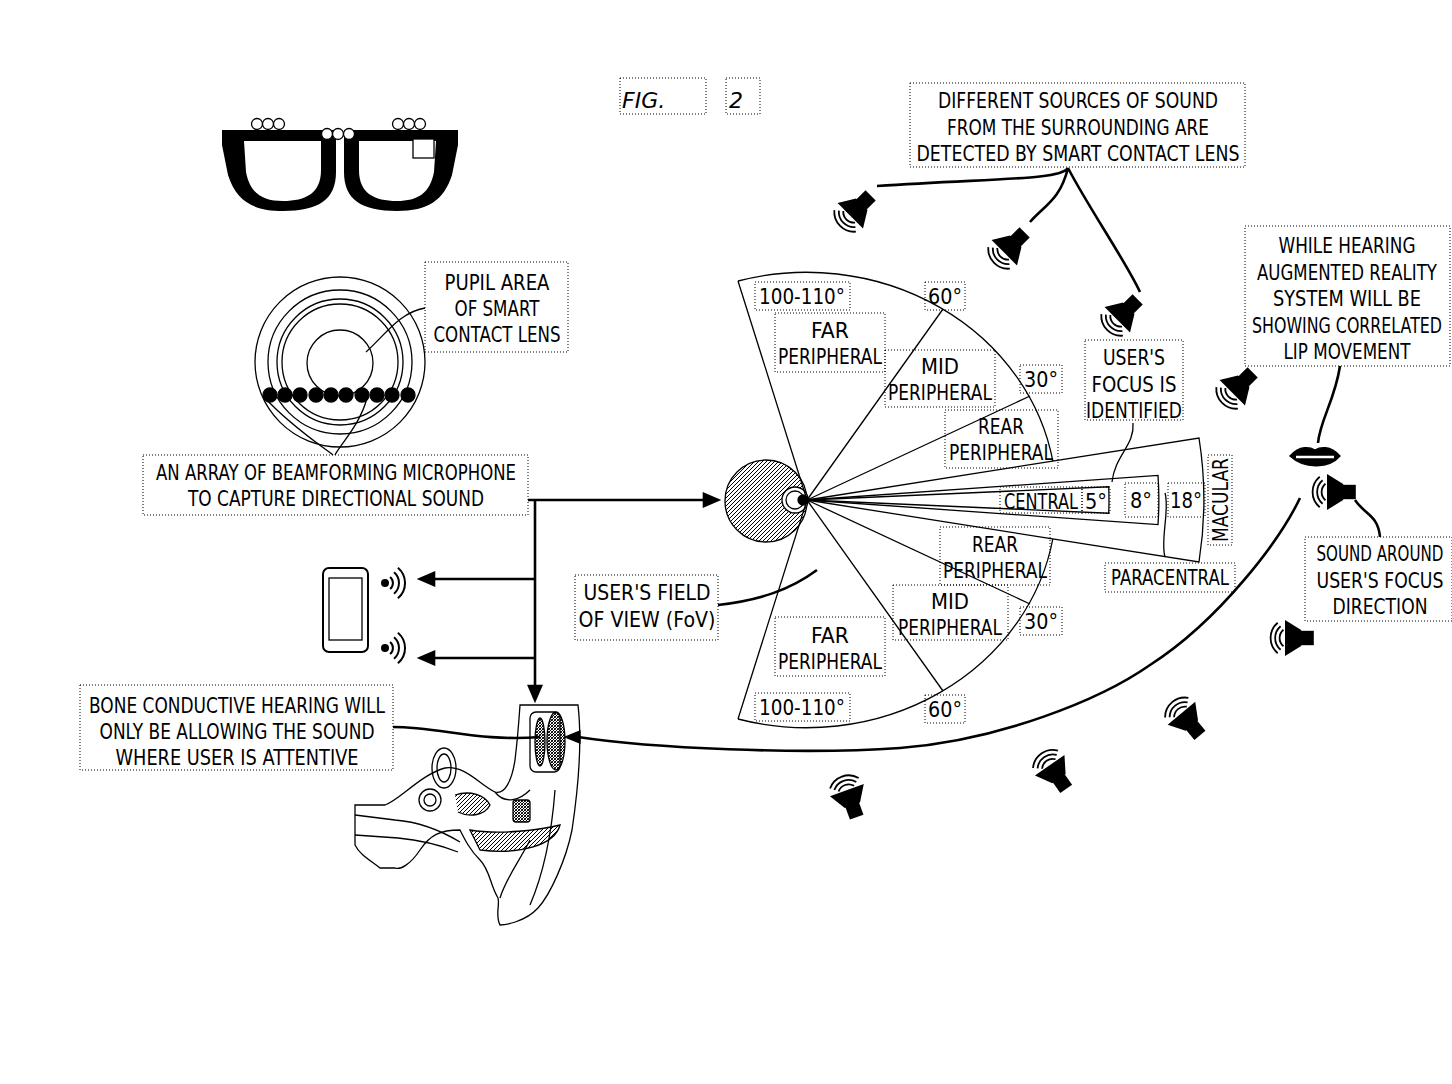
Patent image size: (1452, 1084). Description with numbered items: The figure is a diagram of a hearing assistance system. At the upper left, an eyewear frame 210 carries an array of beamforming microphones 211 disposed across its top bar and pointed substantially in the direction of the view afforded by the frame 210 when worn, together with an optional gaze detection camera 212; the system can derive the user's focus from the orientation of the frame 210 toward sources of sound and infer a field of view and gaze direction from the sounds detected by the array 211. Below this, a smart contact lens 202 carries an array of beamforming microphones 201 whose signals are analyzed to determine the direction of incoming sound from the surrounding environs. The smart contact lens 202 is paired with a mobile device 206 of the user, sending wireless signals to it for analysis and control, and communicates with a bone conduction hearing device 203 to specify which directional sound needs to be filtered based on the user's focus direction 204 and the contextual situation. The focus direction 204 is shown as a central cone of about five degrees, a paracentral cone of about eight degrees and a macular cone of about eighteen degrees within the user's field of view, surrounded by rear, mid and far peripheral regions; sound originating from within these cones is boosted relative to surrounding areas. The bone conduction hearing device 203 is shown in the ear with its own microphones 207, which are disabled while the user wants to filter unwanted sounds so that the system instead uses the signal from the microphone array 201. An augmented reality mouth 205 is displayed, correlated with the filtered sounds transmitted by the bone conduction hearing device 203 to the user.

The array of beamforming microphones 201 is at (268, 396).
The smart contact lens 202 is at (268, 325).
The bone conduction hearing device 203 is at (590, 758).
The user's focus direction 204 is at (1108, 548).
The augmented reality mouth 205 is at (1380, 482).
The mobile device 206 is at (323, 610).
The microphones 207 is at (540, 812).
The frame 210 is at (226, 142).
The array of beamforming microphones 211 is at (418, 124).
The gaze detection camera 212 is at (432, 158).